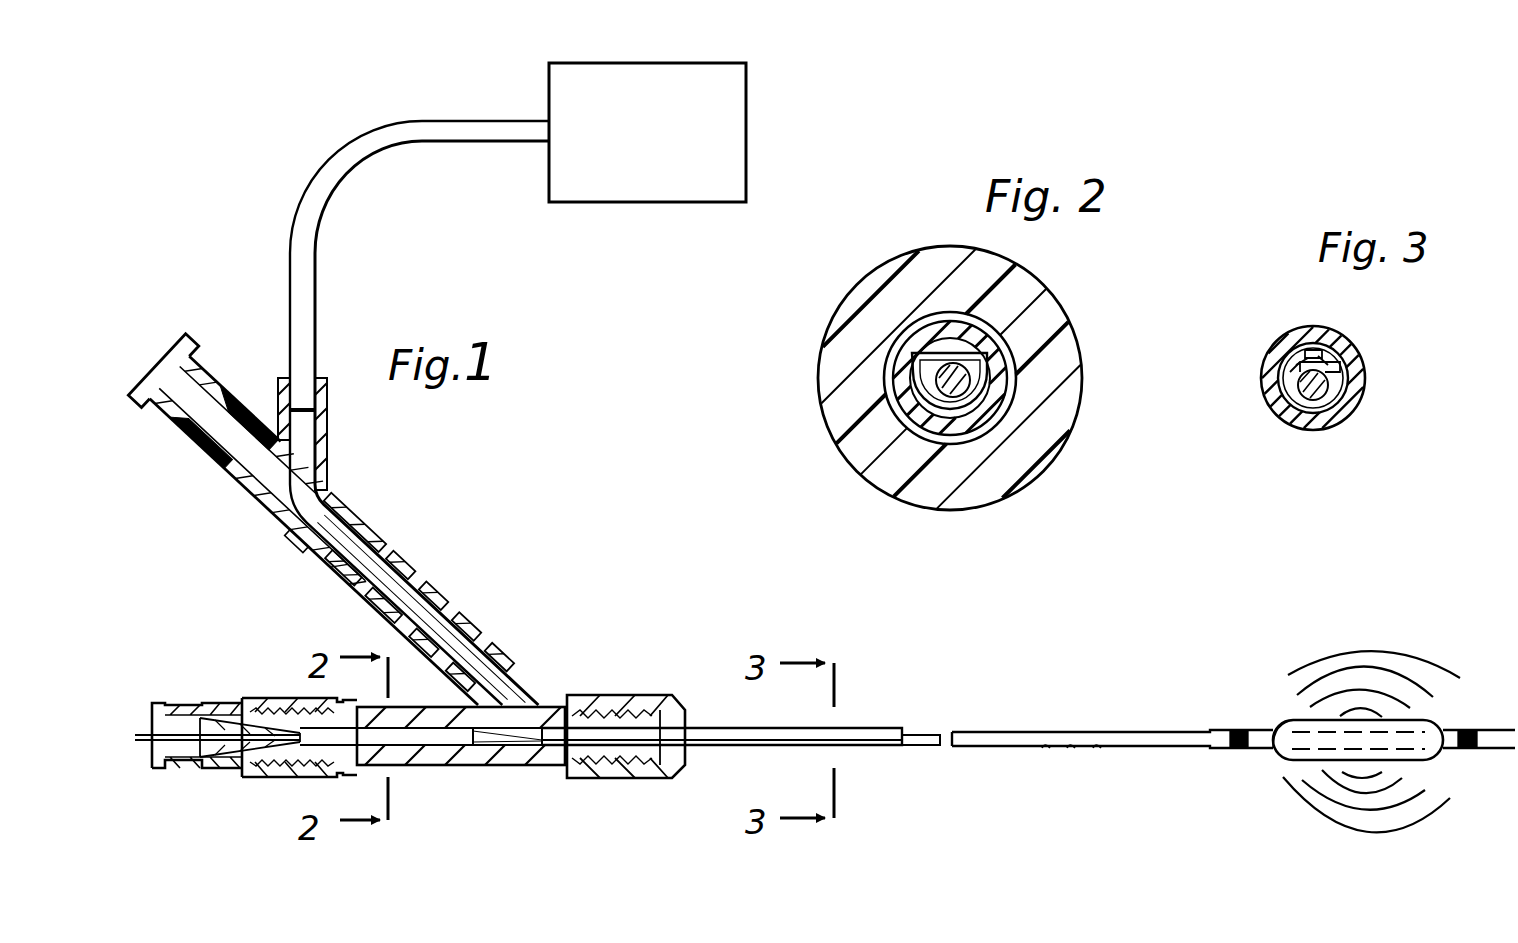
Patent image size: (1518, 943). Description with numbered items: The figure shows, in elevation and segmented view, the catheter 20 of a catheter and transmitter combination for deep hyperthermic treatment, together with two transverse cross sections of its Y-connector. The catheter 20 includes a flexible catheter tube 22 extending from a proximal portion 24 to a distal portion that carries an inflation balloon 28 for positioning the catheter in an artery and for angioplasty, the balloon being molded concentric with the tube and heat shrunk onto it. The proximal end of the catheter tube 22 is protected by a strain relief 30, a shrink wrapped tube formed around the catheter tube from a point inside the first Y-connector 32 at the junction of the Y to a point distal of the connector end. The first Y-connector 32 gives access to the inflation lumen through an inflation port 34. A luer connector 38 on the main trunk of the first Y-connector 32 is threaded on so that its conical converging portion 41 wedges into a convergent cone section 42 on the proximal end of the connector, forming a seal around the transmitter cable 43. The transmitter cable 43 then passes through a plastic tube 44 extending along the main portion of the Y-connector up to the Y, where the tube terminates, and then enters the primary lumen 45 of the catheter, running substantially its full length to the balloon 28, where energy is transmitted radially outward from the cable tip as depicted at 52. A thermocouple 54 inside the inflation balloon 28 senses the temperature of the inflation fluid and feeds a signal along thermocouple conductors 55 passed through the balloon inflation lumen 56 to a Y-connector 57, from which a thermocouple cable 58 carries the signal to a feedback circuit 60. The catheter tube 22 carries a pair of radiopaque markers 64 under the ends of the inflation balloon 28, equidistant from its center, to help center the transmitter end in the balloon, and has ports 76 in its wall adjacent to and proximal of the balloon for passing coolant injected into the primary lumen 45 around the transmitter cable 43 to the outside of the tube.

In FIG. 1, the catheter 20 is at (662, 645).
In FIG. 1, the catheter tube 22 is at (955, 735).
In FIG. 1, the proximal portion 24 is at (702, 680).
In FIG. 1, the inflation balloon 28 is at (1425, 720).
In FIG. 1, the strain relief 30 is at (905, 728).
In FIG. 2, the strain relief 30 is at (1020, 380).
In FIG. 3, the strain relief 30 is at (1266, 365).
In FIG. 1, the first Y-connector 32 is at (465, 766).
In FIG. 2, the first Y-connector 32 is at (1083, 405).
In FIG. 1, the inflation port 34 is at (180, 345).
In FIG. 1, the luer connector 38 is at (150, 690).
In FIG. 1, the conical converging portion 41 is at (230, 727).
In FIG. 1, the convergent cone section 42 is at (297, 700).
In FIG. 1, the transmitter cable 43 is at (180, 730).
In FIG. 2, the transmitter cable 43 is at (932, 390).
In FIG. 3, the transmitter cable 43 is at (1330, 422).
In FIG. 2, the plastic tube 44 is at (905, 372).
In FIG. 3, the primary lumen 45 is at (1330, 385).
In FIG. 1, the transmitted energy 52 is at (1357, 655).
In FIG. 1, the thermocouple 54 is at (1290, 726).
In FIG. 1, the thermocouple conductors 55 is at (462, 640).
In FIG. 3, the thermocouple conductors 55 is at (1315, 350).
In FIG. 3, the balloon inflation lumen 56 is at (1333, 356).
In FIG. 1, the Y-connector 57 is at (340, 492).
In FIG. 1, the thermocouple cable 58 is at (345, 133).
In FIG. 1, the feedback circuit 60 is at (745, 64).
In FIG. 1, the radiopaque markers 64 is at (1238, 728).
In FIG. 1, the ports 76 is at (1045, 748).